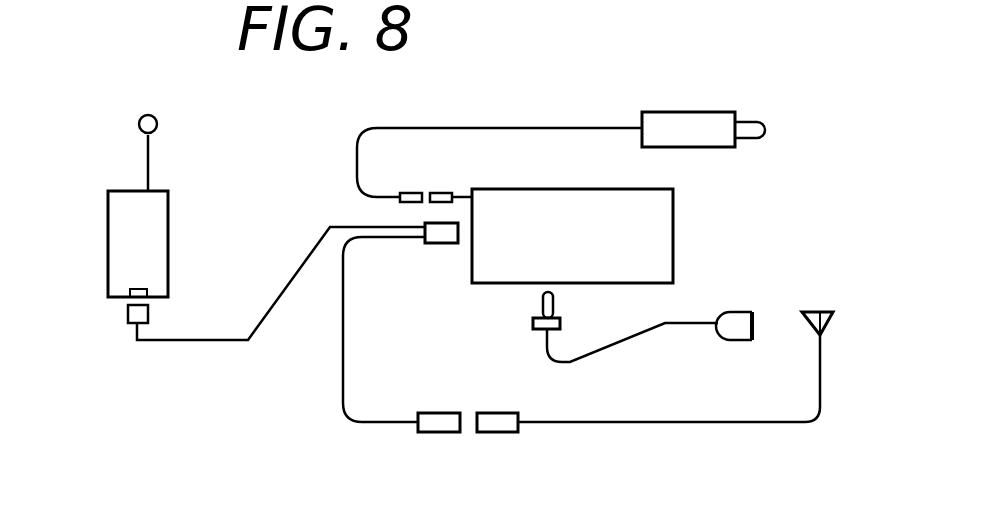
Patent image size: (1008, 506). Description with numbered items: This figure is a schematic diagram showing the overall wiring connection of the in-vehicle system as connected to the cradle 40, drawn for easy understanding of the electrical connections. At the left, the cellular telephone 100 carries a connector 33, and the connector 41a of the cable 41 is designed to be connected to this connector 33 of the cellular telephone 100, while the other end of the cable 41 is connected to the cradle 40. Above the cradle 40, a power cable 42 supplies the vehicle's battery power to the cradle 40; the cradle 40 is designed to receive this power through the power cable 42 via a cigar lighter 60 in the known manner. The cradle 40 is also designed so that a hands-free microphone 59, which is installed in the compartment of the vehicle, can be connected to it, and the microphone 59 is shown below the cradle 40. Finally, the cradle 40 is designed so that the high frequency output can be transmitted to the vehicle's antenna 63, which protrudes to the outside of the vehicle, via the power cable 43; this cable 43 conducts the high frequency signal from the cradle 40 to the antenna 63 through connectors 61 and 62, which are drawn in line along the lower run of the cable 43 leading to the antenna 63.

The cellular telephone 100 is at (240, 225).
The connector 33 is at (130, 289).
The connector 41a is at (128, 317).
The cable 41 is at (198, 340).
The power cable 42 is at (525, 127).
The power cable 43 is at (343, 325).
The cradle 40 is at (658, 227).
The cigar lighter 60 is at (705, 118).
The connector 61 is at (437, 432).
The connector 62 is at (500, 432).
The hands-free microphone 59 is at (740, 343).
The vehicle's antenna 63 is at (825, 333).